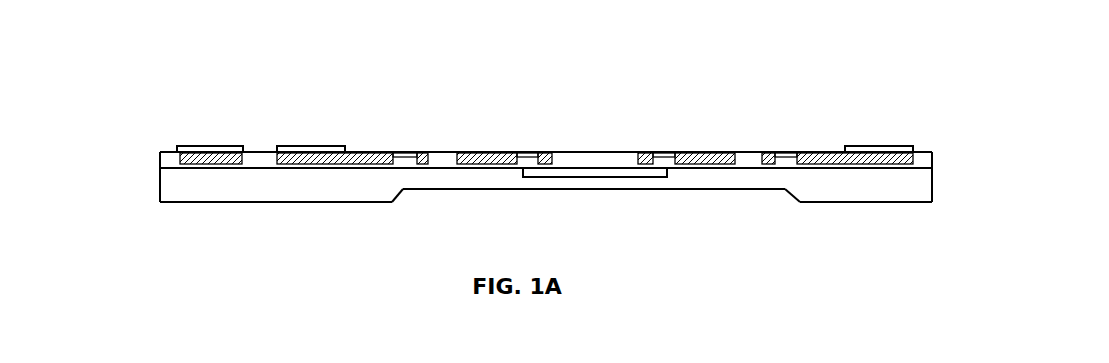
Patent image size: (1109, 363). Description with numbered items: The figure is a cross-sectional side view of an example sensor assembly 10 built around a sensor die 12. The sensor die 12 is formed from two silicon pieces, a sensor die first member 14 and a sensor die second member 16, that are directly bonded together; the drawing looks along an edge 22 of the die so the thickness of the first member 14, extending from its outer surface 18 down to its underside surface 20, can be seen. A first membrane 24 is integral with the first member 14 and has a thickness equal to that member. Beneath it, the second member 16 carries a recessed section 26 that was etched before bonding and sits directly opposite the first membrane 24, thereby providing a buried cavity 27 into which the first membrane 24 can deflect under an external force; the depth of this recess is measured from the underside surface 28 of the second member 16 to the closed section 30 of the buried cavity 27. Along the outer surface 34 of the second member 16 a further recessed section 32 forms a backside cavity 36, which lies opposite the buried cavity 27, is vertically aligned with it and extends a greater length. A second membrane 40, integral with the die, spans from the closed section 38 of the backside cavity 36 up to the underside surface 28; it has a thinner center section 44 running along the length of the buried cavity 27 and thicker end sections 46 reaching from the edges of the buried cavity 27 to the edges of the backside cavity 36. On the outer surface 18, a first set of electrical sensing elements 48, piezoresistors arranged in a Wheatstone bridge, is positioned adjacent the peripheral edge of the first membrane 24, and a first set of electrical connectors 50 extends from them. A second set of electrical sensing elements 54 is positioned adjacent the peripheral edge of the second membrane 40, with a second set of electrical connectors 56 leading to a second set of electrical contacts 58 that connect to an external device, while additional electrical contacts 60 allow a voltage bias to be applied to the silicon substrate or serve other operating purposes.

The sensor assembly 10 is at (857, 83).
The sensor die 12 is at (930, 168).
The sensor die first member 14 is at (170, 160).
The sensor die second member 16 is at (170, 192).
The outer surface 18 is at (172, 153).
The underside surface 20 is at (170, 170).
The edge 22 is at (160, 187).
The first membrane 24 is at (608, 158).
The recessed section 26 is at (565, 167).
The buried cavity 27 is at (632, 167).
The underside surface 28 is at (258, 160).
The closed section 30 is at (643, 177).
The recessed section 32 is at (423, 189).
The outer surface 34 is at (348, 203).
The backside cavity 36 is at (768, 197).
The closed section 38 is at (722, 190).
The second membrane 40 is at (457, 170).
The center section 44 is at (592, 185).
The end sections 46 is at (442, 178).
The first set of electrical sensing elements 48 is at (530, 153).
The first set of electrical connectors 50 is at (497, 152).
The second set of electrical sensing elements 54 is at (402, 153).
The second set of electrical connectors 56 is at (363, 153).
The second set of electrical contacts 58 is at (290, 148).
The electrical contacts 60 is at (222, 146).